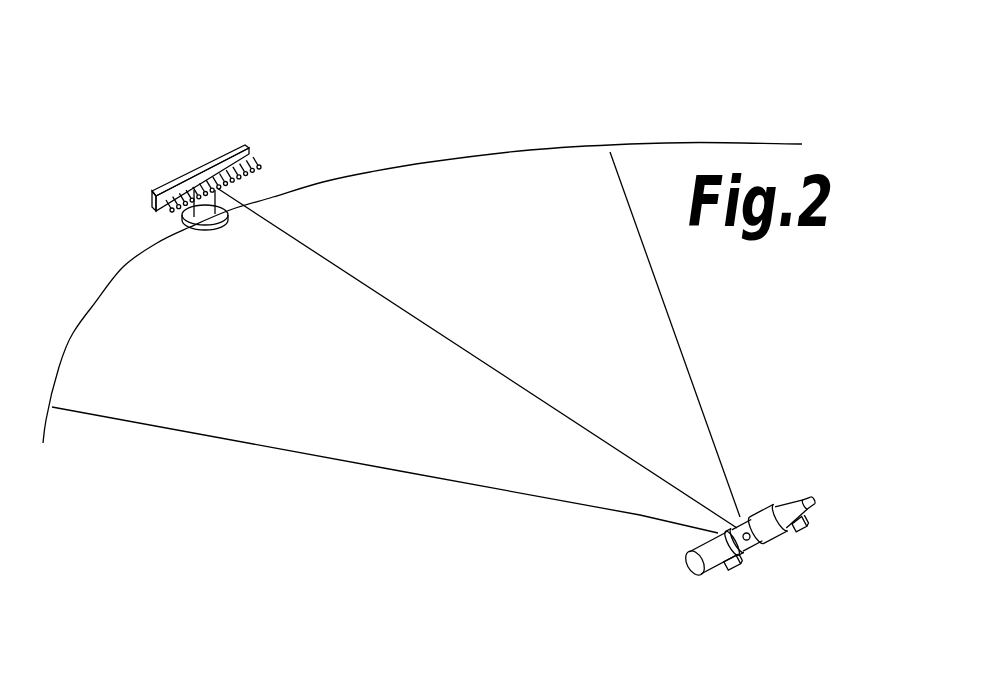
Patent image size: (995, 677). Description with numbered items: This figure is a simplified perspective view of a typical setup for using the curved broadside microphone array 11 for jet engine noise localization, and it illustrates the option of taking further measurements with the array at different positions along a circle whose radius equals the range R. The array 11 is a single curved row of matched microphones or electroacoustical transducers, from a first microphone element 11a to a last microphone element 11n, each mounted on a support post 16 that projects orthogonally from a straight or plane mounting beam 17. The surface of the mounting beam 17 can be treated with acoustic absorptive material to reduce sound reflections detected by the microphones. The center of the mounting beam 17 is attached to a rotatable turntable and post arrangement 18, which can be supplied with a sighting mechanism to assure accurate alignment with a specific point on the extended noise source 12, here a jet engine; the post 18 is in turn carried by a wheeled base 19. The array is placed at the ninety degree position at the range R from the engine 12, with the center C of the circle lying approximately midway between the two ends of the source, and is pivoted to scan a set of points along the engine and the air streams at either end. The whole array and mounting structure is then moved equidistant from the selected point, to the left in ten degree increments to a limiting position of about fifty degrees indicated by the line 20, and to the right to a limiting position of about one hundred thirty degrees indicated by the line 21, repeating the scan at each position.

The curved broadside microphone array 11 is at (191, 147).
The microphone element 11a is at (170, 211).
The microphone element 11n is at (262, 167).
The extended noise source 12 is at (748, 543).
The support post 16 is at (259, 162).
The mounting beam 17 is at (176, 181).
The rotatable turntable and post arrangement 18 is at (193, 216).
The wheeled base 19 is at (205, 224).
The line 20 is at (224, 442).
The line 21 is at (671, 317).
The range radius R is at (477, 358).
The center C is at (751, 540).